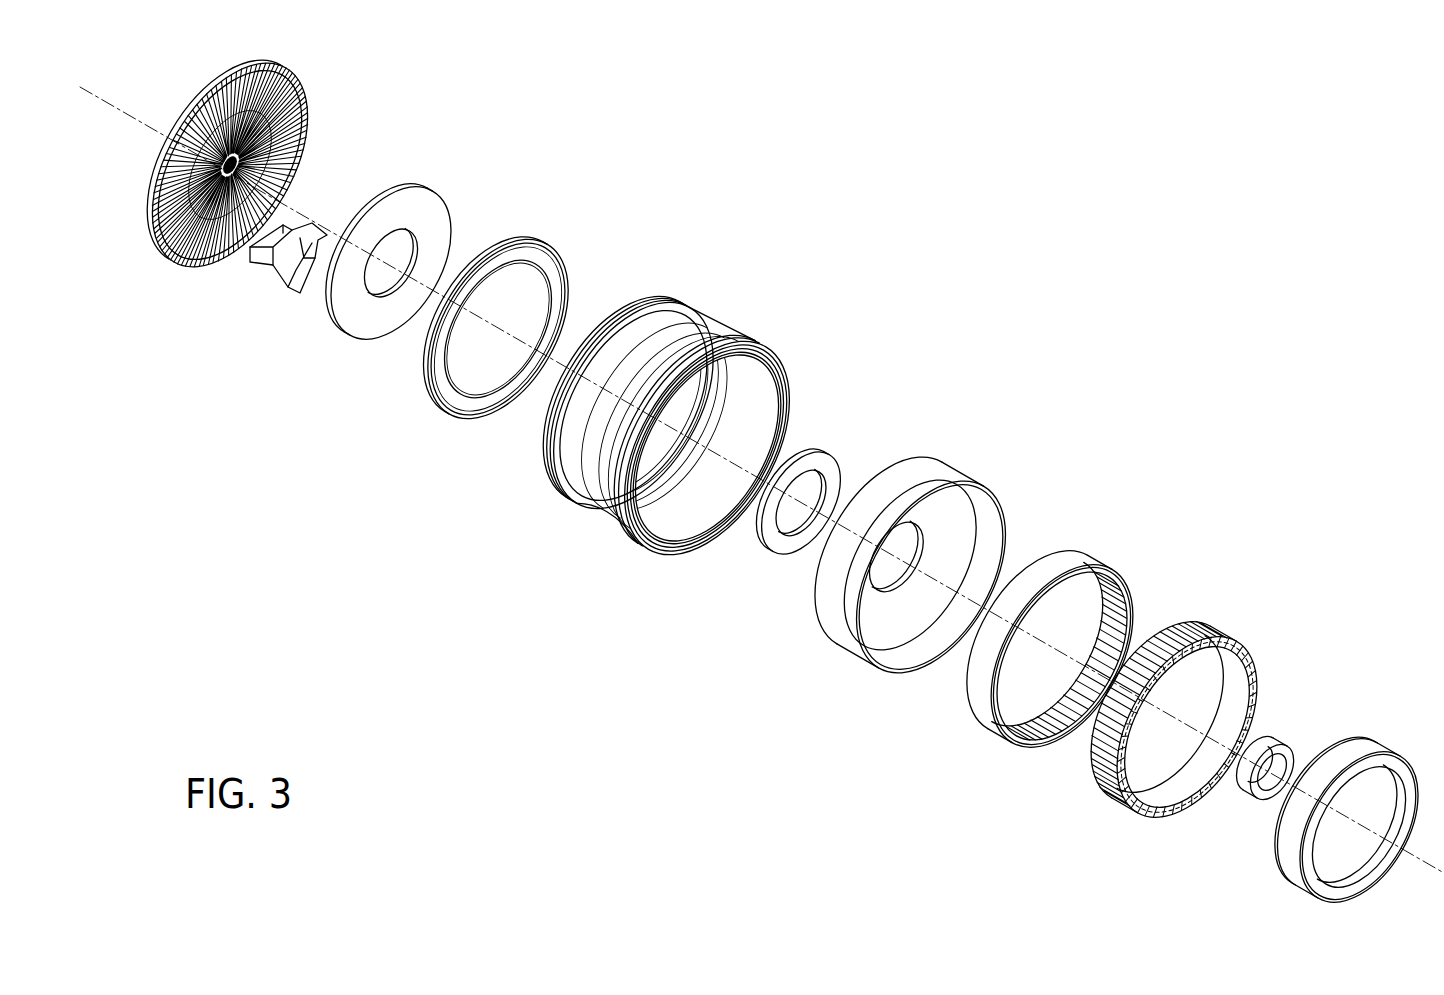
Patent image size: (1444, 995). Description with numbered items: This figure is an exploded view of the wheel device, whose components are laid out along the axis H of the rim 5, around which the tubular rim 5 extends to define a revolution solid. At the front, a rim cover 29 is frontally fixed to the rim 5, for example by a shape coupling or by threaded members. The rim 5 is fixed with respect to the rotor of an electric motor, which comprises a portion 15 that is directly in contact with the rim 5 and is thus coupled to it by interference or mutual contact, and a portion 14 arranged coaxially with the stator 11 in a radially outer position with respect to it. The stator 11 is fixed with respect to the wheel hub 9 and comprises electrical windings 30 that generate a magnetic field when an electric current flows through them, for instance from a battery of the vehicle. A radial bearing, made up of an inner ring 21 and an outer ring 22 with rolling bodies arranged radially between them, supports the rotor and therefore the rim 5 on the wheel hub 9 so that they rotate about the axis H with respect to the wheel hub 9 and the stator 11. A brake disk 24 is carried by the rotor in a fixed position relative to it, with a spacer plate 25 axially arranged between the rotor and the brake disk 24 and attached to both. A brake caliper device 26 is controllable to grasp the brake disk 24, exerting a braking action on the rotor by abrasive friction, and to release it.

The axis H is at (121, 106).
The rim cover 29 is at (298, 75).
The brake caliper device 26 is at (290, 278).
The brake disk 24 is at (437, 206).
The spacer plate 25 is at (553, 245).
The rim 5 is at (700, 332).
The outer ring 22 is at (827, 462).
The portion 15 is at (950, 478).
The portion 14 is at (1093, 556).
The stator 11 is at (1214, 700).
The electrical windings 30 is at (1257, 700).
The inner ring 21 is at (1250, 790).
The wheel hub 9 is at (1393, 740).